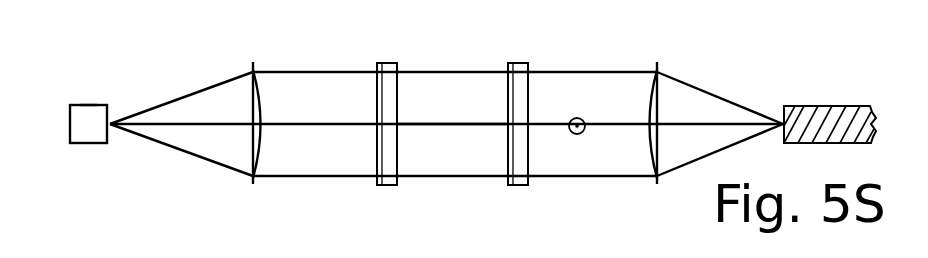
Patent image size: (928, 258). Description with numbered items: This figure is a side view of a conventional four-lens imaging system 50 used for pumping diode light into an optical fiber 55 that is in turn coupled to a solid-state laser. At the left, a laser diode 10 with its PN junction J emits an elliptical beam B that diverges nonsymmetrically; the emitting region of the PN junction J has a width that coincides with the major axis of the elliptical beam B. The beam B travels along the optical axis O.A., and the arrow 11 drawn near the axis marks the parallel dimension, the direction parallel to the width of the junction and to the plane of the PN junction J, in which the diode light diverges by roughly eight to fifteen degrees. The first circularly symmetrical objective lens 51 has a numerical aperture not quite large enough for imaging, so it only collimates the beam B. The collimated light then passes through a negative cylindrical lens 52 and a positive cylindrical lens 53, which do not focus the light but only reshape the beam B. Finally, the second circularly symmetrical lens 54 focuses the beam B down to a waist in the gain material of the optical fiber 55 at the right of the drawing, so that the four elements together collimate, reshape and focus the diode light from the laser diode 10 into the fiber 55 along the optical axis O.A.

The laser diode 10 is at (67, 92).
The PN junction J is at (88, 96).
The elliptical beam B is at (193, 113).
The first circularly symmetrical objective lens 51 is at (253, 68).
The negative cylindrical lens 52 is at (377, 66).
The positive cylindrical lens 53 is at (509, 66).
The second circularly symmetrical lens 54 is at (645, 70).
The optical fiber 55 is at (794, 106).
The four-lens imaging system 50 is at (840, 59).
The arrow 11 is at (578, 134).
The optical axis O.A. is at (435, 124).